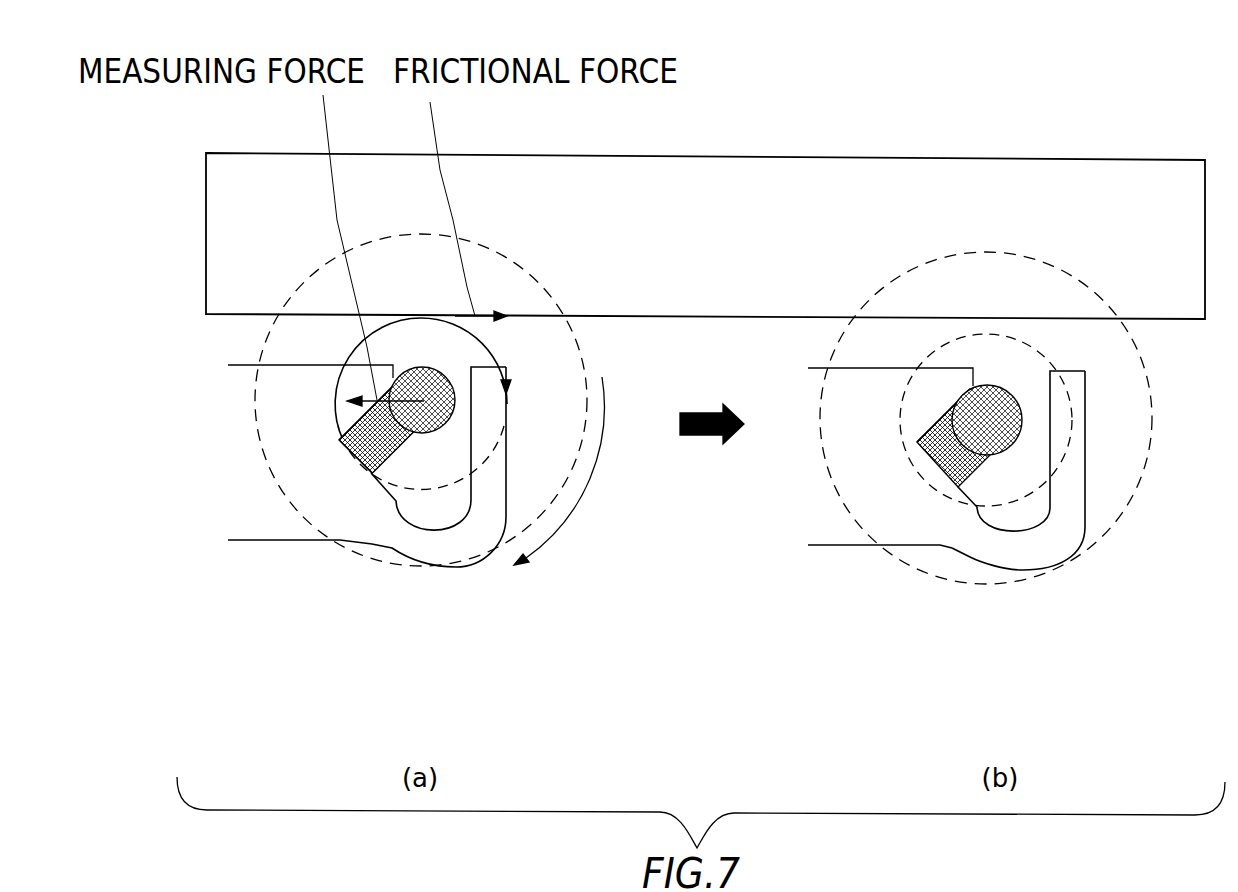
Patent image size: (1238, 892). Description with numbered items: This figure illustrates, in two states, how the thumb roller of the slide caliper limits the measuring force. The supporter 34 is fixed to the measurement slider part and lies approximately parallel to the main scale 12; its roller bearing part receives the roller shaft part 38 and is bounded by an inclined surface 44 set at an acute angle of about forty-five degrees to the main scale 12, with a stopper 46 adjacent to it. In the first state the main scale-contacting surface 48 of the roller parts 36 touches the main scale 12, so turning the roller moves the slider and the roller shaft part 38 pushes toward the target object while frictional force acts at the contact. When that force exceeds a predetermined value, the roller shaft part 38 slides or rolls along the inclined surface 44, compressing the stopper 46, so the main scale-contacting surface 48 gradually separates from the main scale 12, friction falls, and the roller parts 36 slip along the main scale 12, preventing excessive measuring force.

The main scale 12 is at (722, 157).
The supporter 34 is at (248, 362).
The roller parts 36 is at (518, 512).
The roller shaft part 38 is at (422, 434).
The inclined surface 44 is at (338, 413).
The stopper 46 is at (401, 502).
The main scale-contacting surface 48 is at (458, 482).